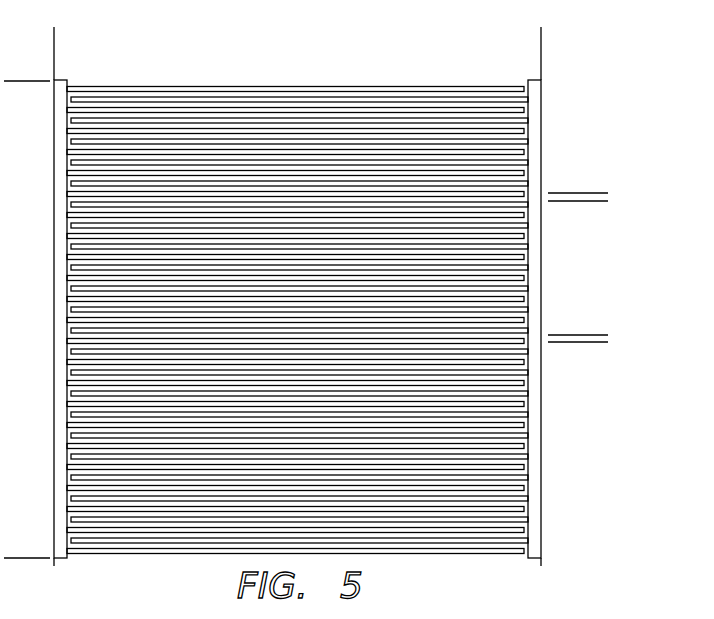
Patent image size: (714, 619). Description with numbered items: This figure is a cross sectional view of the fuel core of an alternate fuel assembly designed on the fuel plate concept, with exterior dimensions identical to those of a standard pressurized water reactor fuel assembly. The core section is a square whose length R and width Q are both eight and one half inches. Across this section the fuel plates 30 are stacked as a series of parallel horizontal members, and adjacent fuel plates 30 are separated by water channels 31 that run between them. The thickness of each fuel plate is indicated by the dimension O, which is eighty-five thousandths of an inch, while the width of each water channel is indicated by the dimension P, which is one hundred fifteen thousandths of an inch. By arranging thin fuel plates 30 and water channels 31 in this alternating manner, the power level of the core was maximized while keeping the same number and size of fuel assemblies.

The fuel plates 30 is at (515, 120).
The water channels 31 is at (412, 92).
The width Q is at (54, 55).
The length R is at (26, 558).
The width of the channel P is at (587, 262).
The thickness of the fuel plate O is at (587, 300).